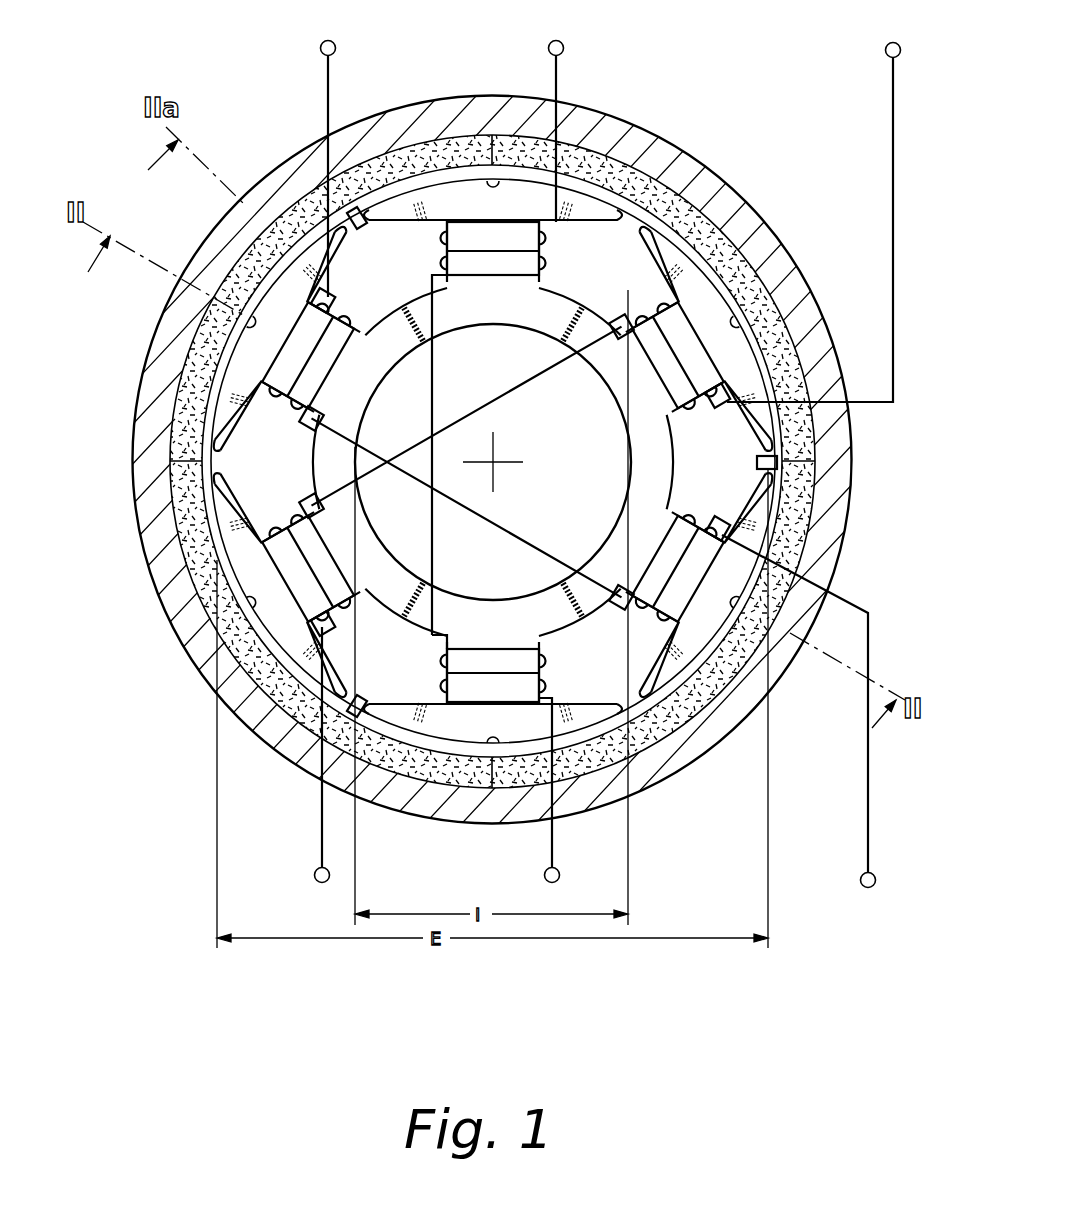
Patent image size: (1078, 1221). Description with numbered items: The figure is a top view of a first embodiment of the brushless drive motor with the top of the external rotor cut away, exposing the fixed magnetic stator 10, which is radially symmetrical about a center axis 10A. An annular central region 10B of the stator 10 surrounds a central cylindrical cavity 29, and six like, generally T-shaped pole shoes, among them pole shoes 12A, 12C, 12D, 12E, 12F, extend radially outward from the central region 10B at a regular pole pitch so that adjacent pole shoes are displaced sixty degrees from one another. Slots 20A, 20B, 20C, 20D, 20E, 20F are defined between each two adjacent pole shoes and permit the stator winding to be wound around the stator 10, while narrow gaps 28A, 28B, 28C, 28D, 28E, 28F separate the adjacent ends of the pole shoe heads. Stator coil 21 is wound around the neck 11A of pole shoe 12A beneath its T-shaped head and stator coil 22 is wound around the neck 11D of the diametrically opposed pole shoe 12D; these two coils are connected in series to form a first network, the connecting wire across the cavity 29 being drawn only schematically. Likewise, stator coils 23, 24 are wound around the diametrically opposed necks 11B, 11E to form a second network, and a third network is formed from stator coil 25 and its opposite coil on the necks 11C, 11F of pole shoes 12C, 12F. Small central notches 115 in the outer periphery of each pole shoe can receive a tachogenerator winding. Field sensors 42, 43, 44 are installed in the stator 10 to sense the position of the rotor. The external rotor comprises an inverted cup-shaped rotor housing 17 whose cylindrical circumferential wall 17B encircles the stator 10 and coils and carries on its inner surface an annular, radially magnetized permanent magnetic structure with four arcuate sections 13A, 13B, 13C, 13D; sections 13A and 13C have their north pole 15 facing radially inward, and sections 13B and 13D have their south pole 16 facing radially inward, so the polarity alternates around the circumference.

The stator 10 is at (493, 462).
The center axis 10A is at (498, 470).
The annular central region 10B is at (618, 404).
The neck of pole shoe 12A 11A is at (441, 240).
The neck of pole shoe 12B 11B is at (645, 315).
The neck of pole shoe 12C 11C is at (694, 522).
The neck of pole shoe 12D 11D is at (440, 684).
The neck of pole shoe 12E 11E is at (292, 518).
The neck of pole shoe 12F 11F is at (288, 402).
The pole shoe 12A is at (497, 185).
The pole shoe 12C is at (748, 664).
The pole shoe 12D is at (393, 712).
The pole shoe 12E is at (245, 562).
The pole shoe 12F is at (225, 301).
The arcuate magnet section 13A is at (715, 228).
The arcuate magnet section 13B is at (705, 690).
The arcuate magnet section 13C is at (290, 712).
The arcuate magnet section 13D is at (305, 205).
The north pole 15 is at (700, 192).
The south pole 16 is at (470, 193).
The rotor housing 17 is at (620, 100).
The cylindrical circumferential wall 17B is at (208, 668).
The slot 20A is at (602, 296).
The slot 20B is at (707, 443).
The slot 20C is at (625, 671).
The slot 20D is at (412, 643).
The slot 20E is at (305, 473).
The slot 20F is at (412, 289).
The stator coil 21 is at (553, 250).
The stator coil 22 is at (512, 648).
The stator coil 23 is at (648, 358).
The stator coil 24 is at (343, 537).
The stator coil 25 is at (681, 510).
The gap 28A is at (628, 222).
The gap 28B is at (800, 478).
The gap 28C is at (660, 748).
The gap 28D is at (335, 668).
The gap 28E is at (215, 438).
The gap 28F is at (372, 190).
The central cylindrical cavity 29 is at (478, 373).
The field sensor 42 is at (357, 234).
The field sensor 43 is at (757, 463).
The field sensor 44 is at (362, 698).
The notch 115 is at (500, 178).